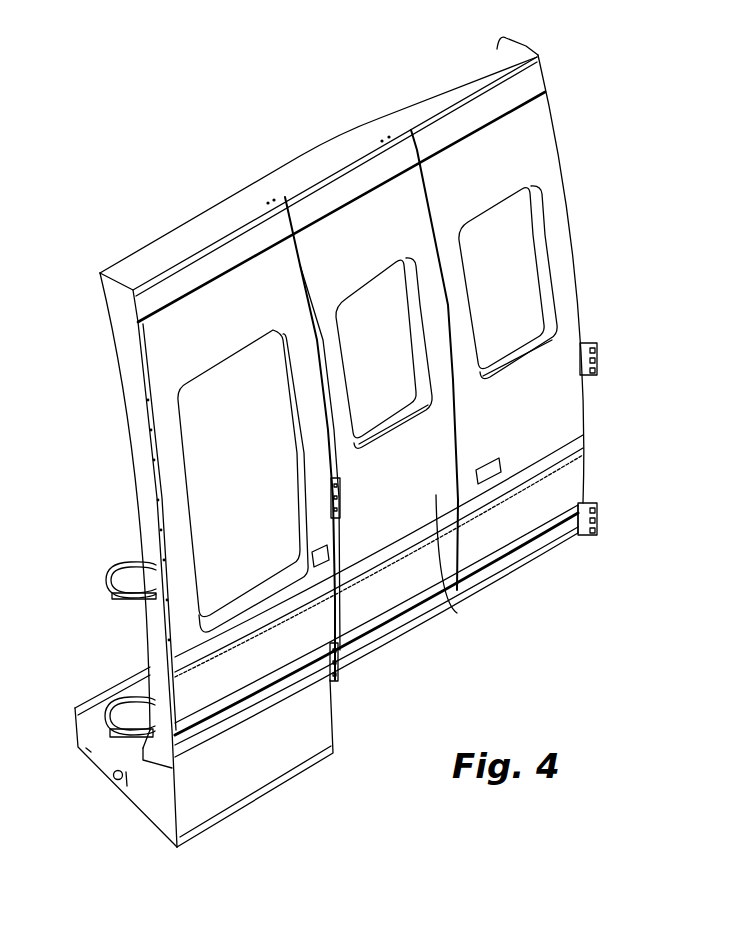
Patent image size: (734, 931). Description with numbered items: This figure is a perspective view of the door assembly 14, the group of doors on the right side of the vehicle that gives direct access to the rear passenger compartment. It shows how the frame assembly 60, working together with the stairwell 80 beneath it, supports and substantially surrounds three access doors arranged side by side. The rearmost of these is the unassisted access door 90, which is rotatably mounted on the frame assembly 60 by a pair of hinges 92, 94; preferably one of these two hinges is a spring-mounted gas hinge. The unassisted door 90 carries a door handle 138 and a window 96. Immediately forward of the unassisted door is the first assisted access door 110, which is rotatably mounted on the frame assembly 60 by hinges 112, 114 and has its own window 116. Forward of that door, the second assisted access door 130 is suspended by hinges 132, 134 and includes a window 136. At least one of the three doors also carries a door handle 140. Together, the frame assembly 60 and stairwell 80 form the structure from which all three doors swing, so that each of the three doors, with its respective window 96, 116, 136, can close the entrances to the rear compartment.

The door assembly 14 is at (656, 242).
The frame assembly 60 is at (500, 57).
The stairwell 80 is at (151, 795).
The unassisted access door 90 is at (293, 747).
The hinge 92 is at (108, 700).
The hinge 94 is at (106, 579).
The window 96 is at (190, 440).
The assisted access door 110 is at (457, 613).
The hinge 112 is at (340, 662).
The hinge 114 is at (340, 498).
The window 116 is at (380, 286).
The assisted access door 130 is at (527, 518).
The hinge 132 is at (598, 510).
The hinge 134 is at (598, 345).
The window 136 is at (507, 213).
The door handle 138 is at (337, 543).
The door handle 140 is at (490, 460).